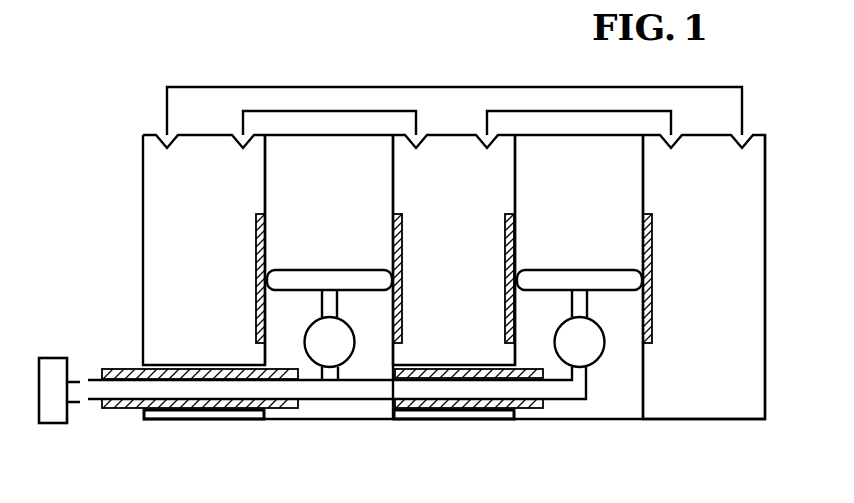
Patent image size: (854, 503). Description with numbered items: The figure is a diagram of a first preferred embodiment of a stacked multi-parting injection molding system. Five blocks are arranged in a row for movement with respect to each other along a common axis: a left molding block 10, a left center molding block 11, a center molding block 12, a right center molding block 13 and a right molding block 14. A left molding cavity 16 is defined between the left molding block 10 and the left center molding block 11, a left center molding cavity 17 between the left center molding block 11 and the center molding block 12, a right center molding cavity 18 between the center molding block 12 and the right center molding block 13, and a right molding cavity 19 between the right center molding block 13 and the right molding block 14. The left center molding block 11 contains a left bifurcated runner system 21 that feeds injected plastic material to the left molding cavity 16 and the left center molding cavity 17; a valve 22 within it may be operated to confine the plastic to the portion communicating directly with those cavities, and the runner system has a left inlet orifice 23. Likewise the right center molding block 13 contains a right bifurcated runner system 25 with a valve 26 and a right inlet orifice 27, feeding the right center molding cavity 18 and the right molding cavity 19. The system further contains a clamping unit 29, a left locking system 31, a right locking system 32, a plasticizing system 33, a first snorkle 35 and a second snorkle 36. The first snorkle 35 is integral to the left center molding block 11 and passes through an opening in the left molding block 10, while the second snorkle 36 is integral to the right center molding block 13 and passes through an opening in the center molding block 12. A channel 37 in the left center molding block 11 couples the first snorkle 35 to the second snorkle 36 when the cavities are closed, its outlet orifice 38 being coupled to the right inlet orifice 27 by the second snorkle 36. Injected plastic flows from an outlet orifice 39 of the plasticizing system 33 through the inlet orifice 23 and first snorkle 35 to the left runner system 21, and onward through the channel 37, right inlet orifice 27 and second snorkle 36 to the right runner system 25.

The left molding block 10 is at (223, 133).
The left center molding block 11 is at (345, 134).
The center molding block 12 is at (466, 134).
The right center molding block 13 is at (591, 133).
The right molding block 14 is at (714, 134).
The left molding cavity 16 is at (255, 225).
The left center molding cavity 17 is at (403, 230).
The right center molding cavity 18 is at (505, 233).
The right molding cavity 19 is at (654, 232).
The left bifurcated runner system 21 is at (324, 312).
The valve 22 is at (347, 329).
The left inlet orifice 23 is at (103, 393).
The right bifurcated runner system 25 is at (574, 312).
The valve 26 is at (592, 329).
The right inlet orifice 27 is at (384, 390).
The clamping unit 29 is at (462, 86).
The left locking system 31 is at (346, 111).
The right locking system 32 is at (557, 111).
The plasticizing system 33 is at (57, 357).
The first snorkle 35 is at (205, 410).
The second snorkle 36 is at (489, 406).
The channel 37 is at (343, 390).
The outlet orifice 38 is at (391, 389).
The outlet orifice 39 is at (90, 392).